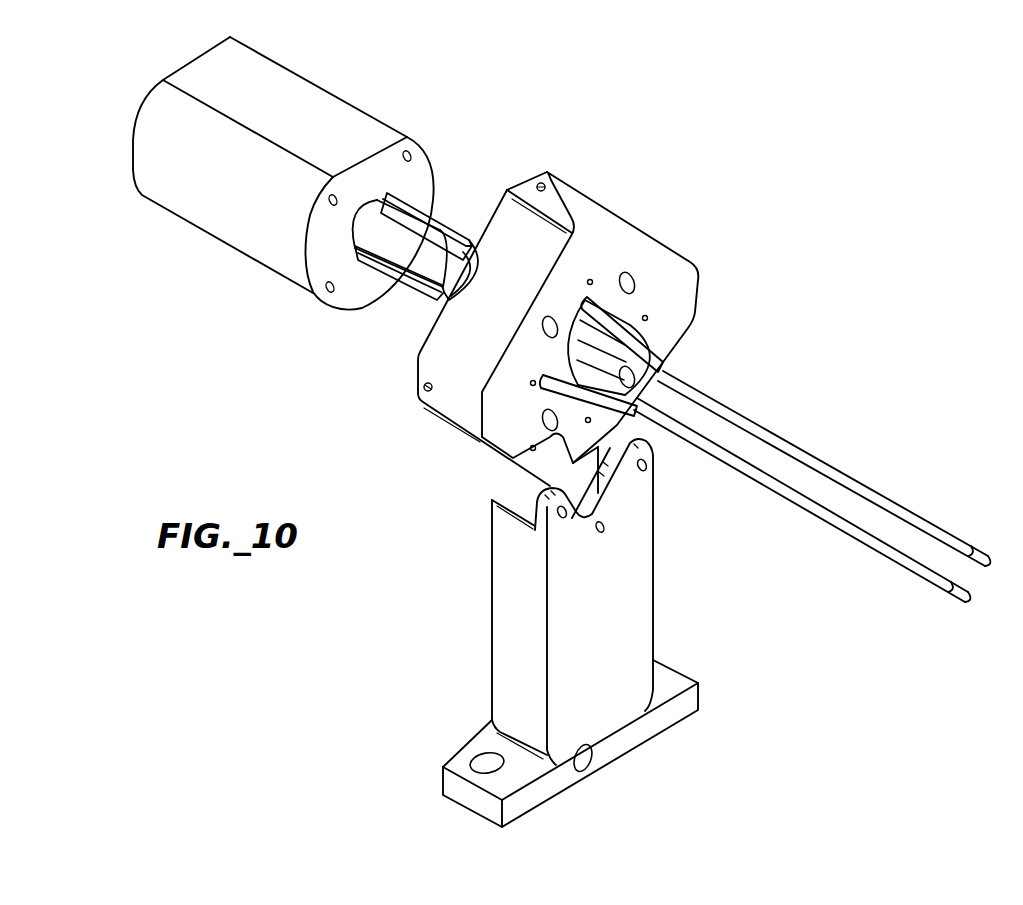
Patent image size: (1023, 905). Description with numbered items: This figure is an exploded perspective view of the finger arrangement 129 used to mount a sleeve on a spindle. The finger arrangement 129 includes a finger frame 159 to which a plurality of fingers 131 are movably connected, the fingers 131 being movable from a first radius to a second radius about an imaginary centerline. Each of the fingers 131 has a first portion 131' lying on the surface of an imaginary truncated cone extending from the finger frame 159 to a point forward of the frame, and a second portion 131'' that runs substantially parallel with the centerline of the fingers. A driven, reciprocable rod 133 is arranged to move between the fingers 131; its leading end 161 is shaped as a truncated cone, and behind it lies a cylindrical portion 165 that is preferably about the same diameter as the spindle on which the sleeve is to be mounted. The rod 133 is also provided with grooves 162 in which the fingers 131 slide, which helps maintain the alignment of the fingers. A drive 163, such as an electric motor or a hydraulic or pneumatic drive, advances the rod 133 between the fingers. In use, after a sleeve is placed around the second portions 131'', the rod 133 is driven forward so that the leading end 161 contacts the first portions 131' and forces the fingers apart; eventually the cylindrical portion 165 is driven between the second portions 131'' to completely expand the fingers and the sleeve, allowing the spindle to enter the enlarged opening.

The finger arrangement 129 is at (426, 449).
The drive 163 is at (305, 93).
The cylindrical portion 165 is at (398, 240).
The grooves 162 is at (433, 293).
The rod 133 is at (454, 223).
The leading end 161 is at (469, 262).
The first portion 131' is at (656, 347).
The fingers 131 is at (764, 449).
The second portion 131'' is at (913, 542).
The finger frame 159 is at (657, 238).